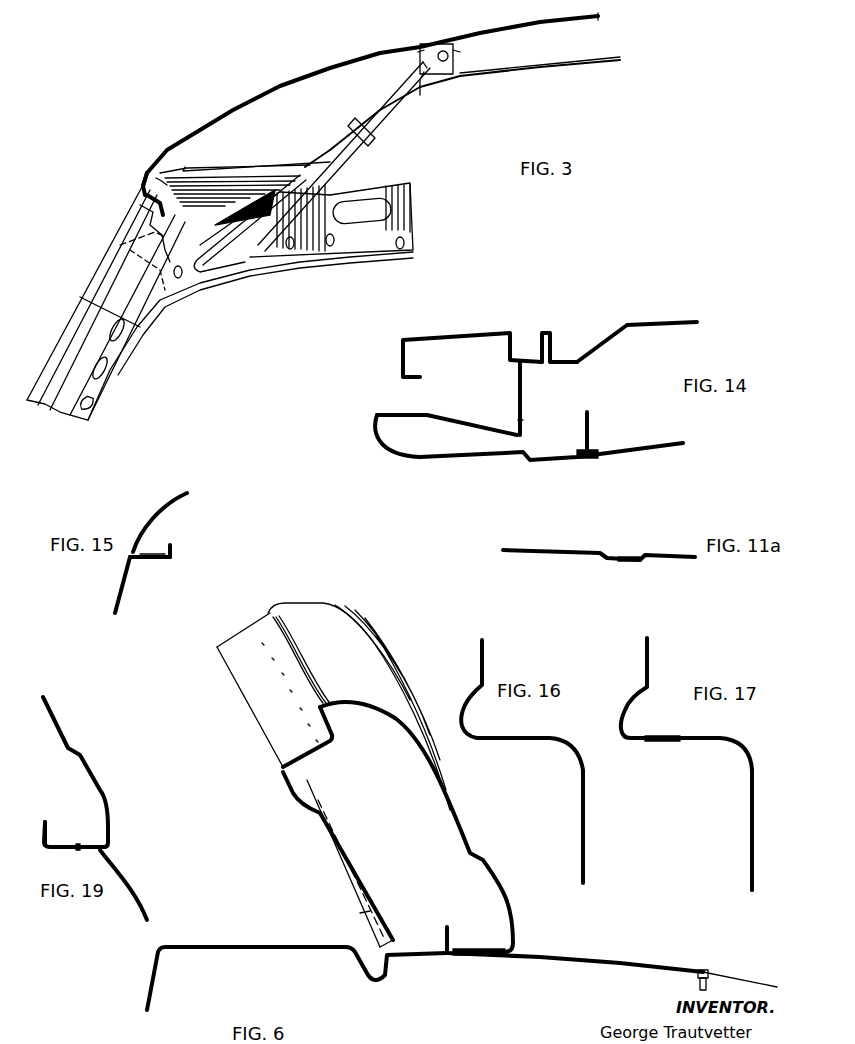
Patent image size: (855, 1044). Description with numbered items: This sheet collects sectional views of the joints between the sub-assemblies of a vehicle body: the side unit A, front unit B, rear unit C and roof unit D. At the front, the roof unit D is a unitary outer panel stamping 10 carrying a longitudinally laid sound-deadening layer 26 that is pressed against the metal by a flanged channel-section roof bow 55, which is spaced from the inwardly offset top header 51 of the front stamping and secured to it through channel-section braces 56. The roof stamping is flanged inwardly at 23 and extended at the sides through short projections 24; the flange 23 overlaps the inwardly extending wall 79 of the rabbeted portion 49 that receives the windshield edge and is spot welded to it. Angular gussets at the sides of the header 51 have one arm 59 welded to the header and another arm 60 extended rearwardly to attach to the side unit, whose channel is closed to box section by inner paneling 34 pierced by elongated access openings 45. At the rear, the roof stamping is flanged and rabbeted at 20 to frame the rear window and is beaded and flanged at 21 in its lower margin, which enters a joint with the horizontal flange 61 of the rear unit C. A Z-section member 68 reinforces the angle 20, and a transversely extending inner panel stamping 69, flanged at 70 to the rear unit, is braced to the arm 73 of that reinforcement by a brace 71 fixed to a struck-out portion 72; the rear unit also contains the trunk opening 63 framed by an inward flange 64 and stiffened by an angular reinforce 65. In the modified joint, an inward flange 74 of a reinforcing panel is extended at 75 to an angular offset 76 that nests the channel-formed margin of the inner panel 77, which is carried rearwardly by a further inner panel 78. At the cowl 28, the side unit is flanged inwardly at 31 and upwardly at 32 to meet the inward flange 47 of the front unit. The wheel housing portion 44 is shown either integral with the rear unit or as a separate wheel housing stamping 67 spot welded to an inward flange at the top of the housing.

In FIG. 3, the outer panel stamping 10 is at (388, 48).
In FIG. 3, the sound-deadening layer 26 is at (560, 24).
In FIG. 3, the roof bow 55 is at (456, 53).
In FIG. 3, the channel section brace 56 is at (390, 112).
In FIG. 3, the inwardly extending wall 79 is at (165, 158).
In FIG. 3, the inner reinforcing top header 51 is at (187, 168).
In FIG. 3, the inner paneling 34 is at (330, 195).
In FIG. 3, the elongated opening 45 is at (385, 200).
In FIG. 3, the gusset arm 60 is at (320, 180).
In FIG. 3, the inwardly extending flange 23 is at (140, 207).
In FIG. 3, the rabbet 49 is at (130, 222).
In FIG. 3, the gusset arm 59 is at (120, 247).
In FIG. 3, the short projection 24 is at (100, 273).
In FIG. 14, the inner panel 77 is at (510, 336).
In FIG. 14, the angular offset 76 is at (540, 362).
In FIG. 14, the inner panel 78 is at (658, 322).
In FIG. 14, the extension 75 is at (518, 385).
In FIG. 14, the inwardly extending flange 74 is at (518, 411).
In FIG. 14, the flange 70 is at (590, 462).
In FIG. 6, the flange 70 is at (446, 935).
In FIG. 14, the brace 71 is at (580, 462).
In FIG. 6, the brace 71 is at (345, 855).
In FIG. 15, the cowl 28 is at (114, 607).
In FIG. 15, the inward flange 31 is at (152, 560).
In FIG. 15, the upward flange 32 is at (174, 550).
In FIG. 15, the inward flange 47 is at (155, 552).
In FIG. 11A, the wheel housing portion 44 is at (605, 553).
In FIG. 16, the wheel housing portion 44 is at (540, 799).
In FIG. 17, the wheel housing portion 44 is at (702, 809).
In FIG. 11A, the wheel housing stamping 67 is at (646, 555).
In FIG. 17, the wheel housing stamping 67 is at (755, 803).
In FIG. 19, the horizontal flange 61 is at (62, 850).
In FIG. 6, the horizontal flange 61 is at (462, 958).
In FIG. 19, the bead and flange 21 is at (93, 845).
In FIG. 6, the bead and flange 21 is at (492, 950).
In FIG. 6, the inward flange and rabbet 20 is at (318, 698).
In FIG. 6, the Z-section member 68 is at (312, 752).
In FIG. 6, the arm 73 is at (290, 793).
In FIG. 6, the struck-out portion 72 is at (362, 922).
In FIG. 6, the inner panel stamping 69 is at (292, 955).
In FIG. 6, the trunk opening 63 is at (712, 972).
In FIG. 6, the angular reinforce 65 is at (698, 977).
In FIG. 6, the inward flange 64 is at (700, 988).
In FIG. 3, the side unit A is at (415, 232).
In FIG. 14, the side unit A is at (488, 458).
In FIG. 15, the side unit A is at (118, 578).
In FIG. 15, the front unit B is at (160, 504).
In FIG. 19, the rear unit C is at (132, 886).
In FIG. 6, the rear unit C is at (583, 958).
In FIG. 3, the roof unit D is at (495, 28).
In FIG. 14, the roof unit D is at (652, 447).
In FIG. 16, the roof unit D is at (458, 788).
In FIG. 19, the roof unit D is at (98, 770).
In FIG. 6, the roof unit D is at (452, 808).